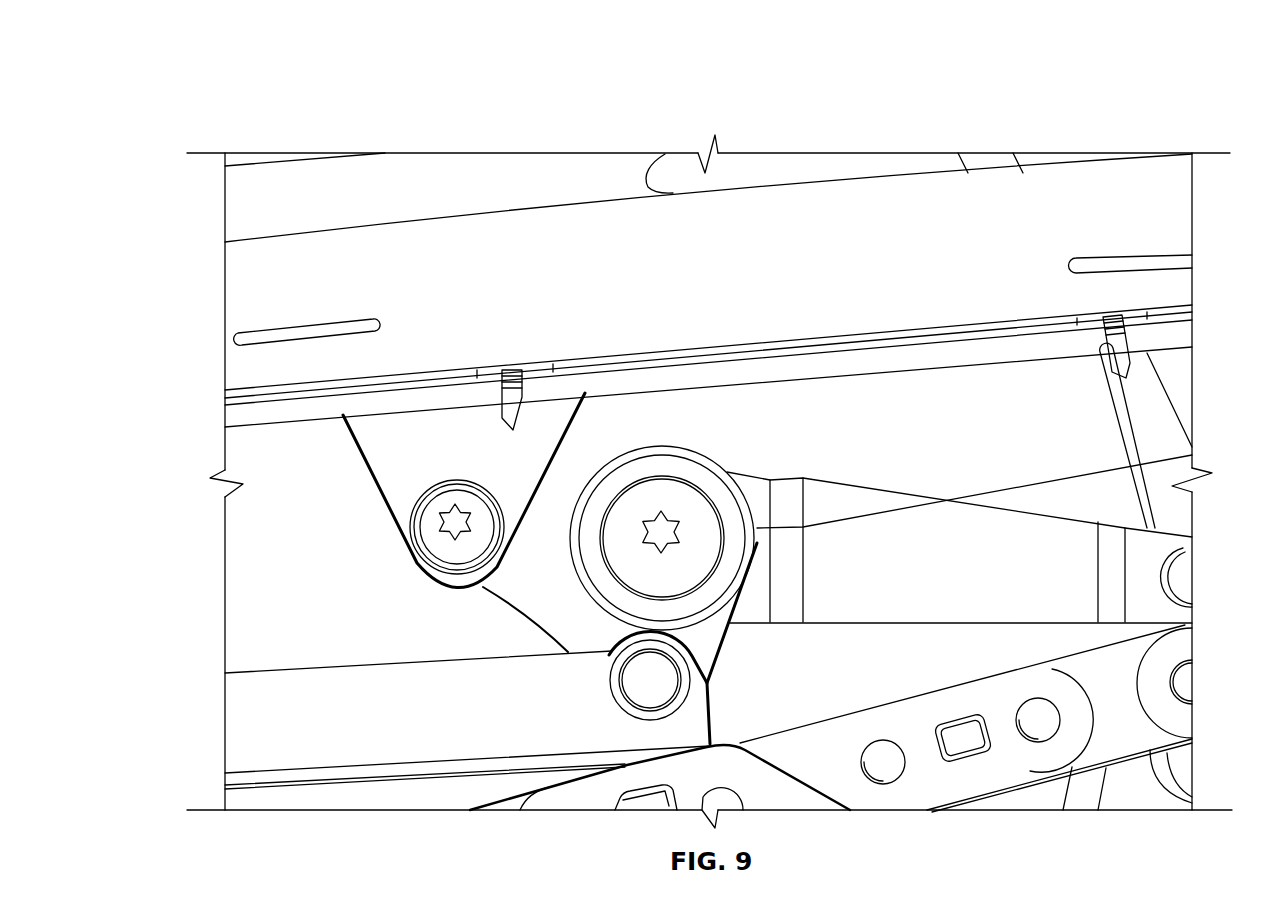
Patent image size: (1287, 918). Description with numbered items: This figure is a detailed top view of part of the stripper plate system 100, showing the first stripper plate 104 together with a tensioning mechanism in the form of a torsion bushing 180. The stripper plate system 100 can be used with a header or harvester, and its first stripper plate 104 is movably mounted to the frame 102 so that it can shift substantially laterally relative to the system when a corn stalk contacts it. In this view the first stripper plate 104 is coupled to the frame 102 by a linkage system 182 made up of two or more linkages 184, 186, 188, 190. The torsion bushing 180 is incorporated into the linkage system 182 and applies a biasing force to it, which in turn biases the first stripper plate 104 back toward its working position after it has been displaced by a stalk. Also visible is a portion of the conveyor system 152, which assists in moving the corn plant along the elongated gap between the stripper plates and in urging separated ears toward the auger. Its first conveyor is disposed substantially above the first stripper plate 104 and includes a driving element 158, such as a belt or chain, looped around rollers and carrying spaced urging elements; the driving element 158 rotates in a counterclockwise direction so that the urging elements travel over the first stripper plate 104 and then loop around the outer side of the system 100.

The stripper plate system 100 is at (199, 97).
The frame 102 is at (557, 164).
The first stripper plate 104 is at (1060, 405).
The conveyor system 152 is at (1198, 725).
The driving element 158 is at (1110, 668).
The torsion bushing 180 is at (1192, 455).
The linkage system 182 is at (712, 426).
The linkage 184 is at (395, 448).
The linkage 186 is at (233, 695).
The linkage 188 is at (565, 497).
The linkage 190 is at (1063, 580).